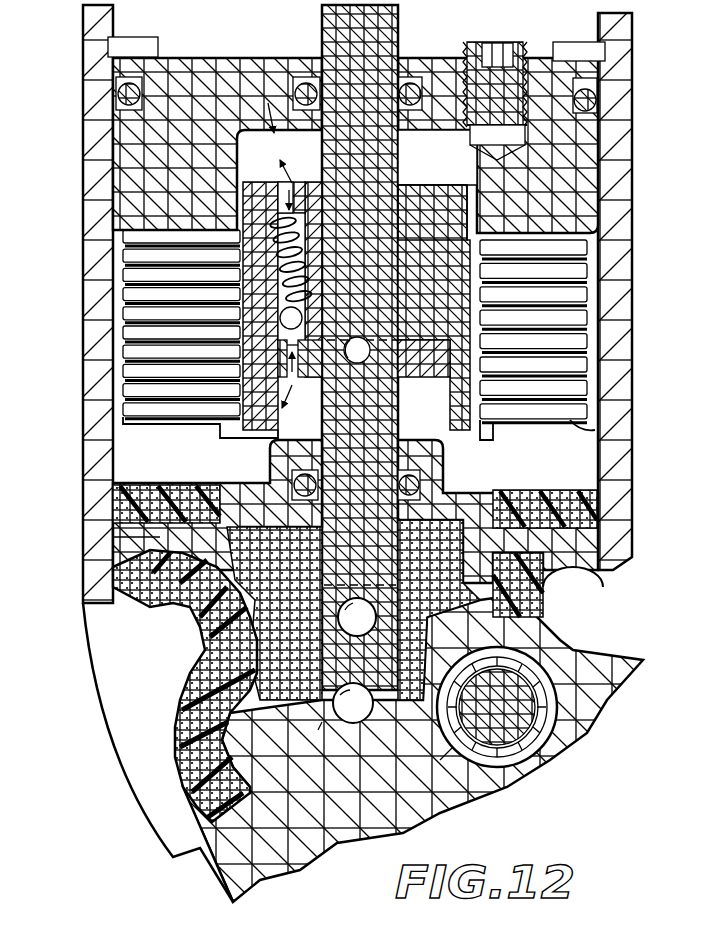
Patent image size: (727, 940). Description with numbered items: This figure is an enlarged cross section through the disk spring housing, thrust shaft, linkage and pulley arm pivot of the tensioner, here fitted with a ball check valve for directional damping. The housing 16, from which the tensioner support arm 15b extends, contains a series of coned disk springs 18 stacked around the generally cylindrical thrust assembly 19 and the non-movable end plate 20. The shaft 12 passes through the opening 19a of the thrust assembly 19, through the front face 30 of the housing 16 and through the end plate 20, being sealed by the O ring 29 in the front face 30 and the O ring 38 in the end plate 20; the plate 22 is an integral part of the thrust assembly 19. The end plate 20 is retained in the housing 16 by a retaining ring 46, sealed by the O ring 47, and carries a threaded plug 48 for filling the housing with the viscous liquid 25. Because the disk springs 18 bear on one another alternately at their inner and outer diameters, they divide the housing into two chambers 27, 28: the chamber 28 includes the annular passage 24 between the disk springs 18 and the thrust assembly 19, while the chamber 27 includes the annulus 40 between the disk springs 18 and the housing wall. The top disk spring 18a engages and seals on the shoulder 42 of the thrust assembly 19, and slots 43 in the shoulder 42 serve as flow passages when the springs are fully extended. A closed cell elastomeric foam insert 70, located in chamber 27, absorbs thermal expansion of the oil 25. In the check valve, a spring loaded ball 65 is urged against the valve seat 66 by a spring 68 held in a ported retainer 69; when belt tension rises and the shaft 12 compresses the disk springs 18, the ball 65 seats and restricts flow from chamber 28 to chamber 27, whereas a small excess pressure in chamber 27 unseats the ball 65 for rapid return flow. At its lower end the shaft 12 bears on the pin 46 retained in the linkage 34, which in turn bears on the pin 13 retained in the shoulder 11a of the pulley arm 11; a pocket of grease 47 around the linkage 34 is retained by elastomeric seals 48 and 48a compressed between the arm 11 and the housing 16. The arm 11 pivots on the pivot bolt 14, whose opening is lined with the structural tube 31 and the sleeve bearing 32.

The arm 11 is at (603, 697).
The shoulder 11a is at (318, 730).
The shaft 12 is at (390, 32).
The pin 13 is at (301, 308).
The pivot bolt 14 is at (532, 723).
The tensioner support arm 15b is at (113, 757).
The housing 16 is at (378, 304).
The disk springs 18 is at (604, 248).
The top disk spring 18a is at (598, 432).
The thrust assembly 19 is at (478, 195).
The opening 19a is at (403, 180).
The end plate 20 is at (238, 57).
The plate 22 is at (410, 387).
The passage 24 is at (485, 218).
The liquid 25 is at (238, 93).
The chamber 27 is at (580, 473).
The chamber 28 is at (447, 127).
The O ring 29 is at (285, 464).
The front face 30 is at (160, 538).
The structural tube 31 is at (440, 760).
The sleeve bearing 32 is at (535, 757).
The linkage 34 is at (312, 686).
The O ring 38 is at (298, 84).
The annulus 40 is at (113, 408).
The shoulder 42 is at (497, 437).
The slots 43 is at (220, 436).
The retaining ring / pin 46 is at (170, 26).
The O ring / grease 47 is at (118, 88).
The threaded plug / elastomeric seal 48 is at (532, 46).
The elastomeric seal 48a is at (600, 578).
The ball 65 is at (306, 252).
The valve seat 66 is at (312, 325).
The spring 68 is at (318, 222).
The ported retainer 69 is at (245, 210).
The closed cell elastomeric foam insert 70 is at (118, 500).